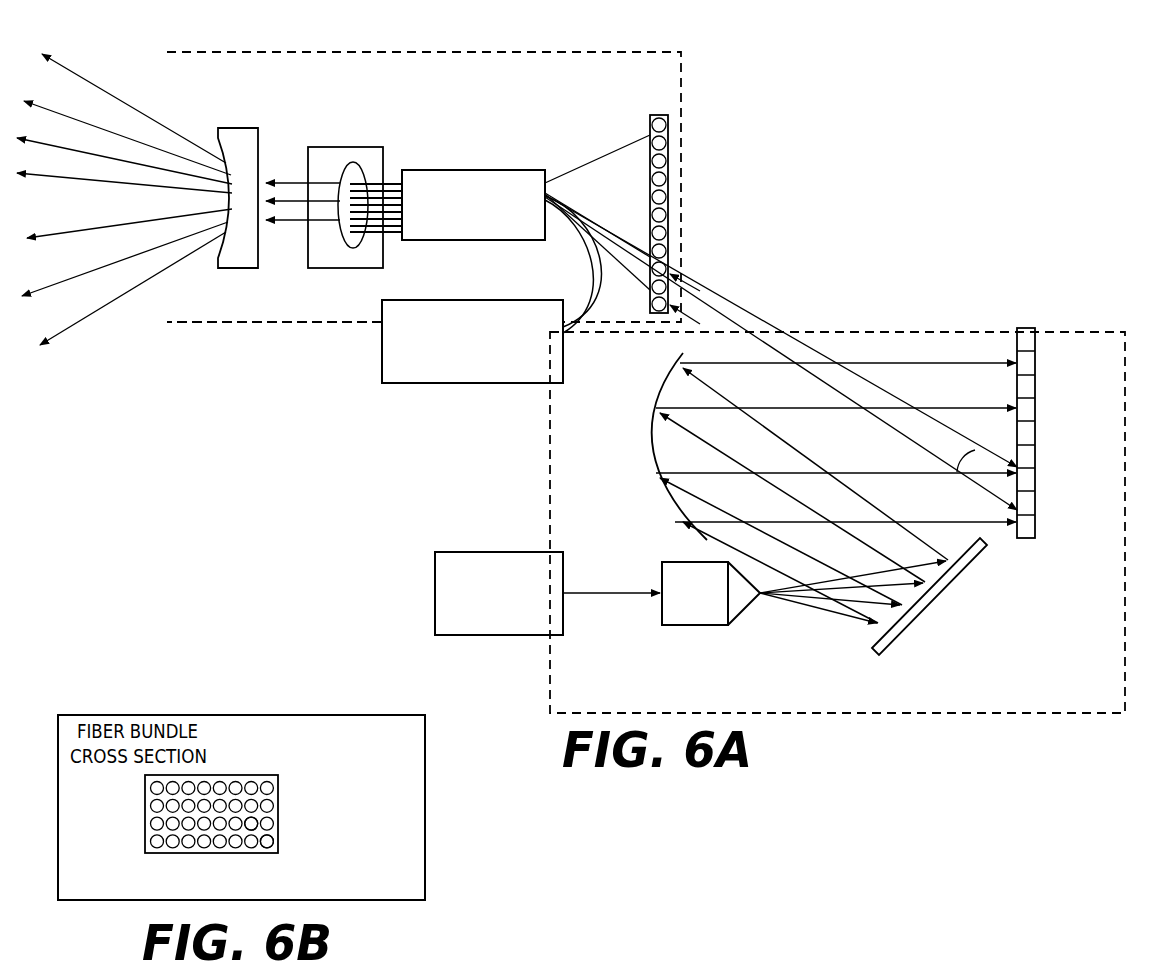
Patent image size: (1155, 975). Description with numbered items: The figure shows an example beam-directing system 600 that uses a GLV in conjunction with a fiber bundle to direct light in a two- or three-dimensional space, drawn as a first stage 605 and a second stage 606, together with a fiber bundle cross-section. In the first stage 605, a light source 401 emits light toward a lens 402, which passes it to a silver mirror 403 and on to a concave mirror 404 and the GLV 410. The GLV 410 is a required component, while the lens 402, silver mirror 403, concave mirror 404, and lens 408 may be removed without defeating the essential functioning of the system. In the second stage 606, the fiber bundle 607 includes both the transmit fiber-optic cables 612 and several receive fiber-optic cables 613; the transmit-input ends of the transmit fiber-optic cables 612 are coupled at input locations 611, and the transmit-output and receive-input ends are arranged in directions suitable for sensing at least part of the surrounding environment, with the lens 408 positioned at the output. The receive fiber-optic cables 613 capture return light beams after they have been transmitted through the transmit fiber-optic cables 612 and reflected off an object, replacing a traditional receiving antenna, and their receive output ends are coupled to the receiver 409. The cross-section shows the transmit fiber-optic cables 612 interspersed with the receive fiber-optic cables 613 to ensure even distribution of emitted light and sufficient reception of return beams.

In FIG. 6A, the beam-directing system 600 is at (893, 62).
In FIG. 6A, the second stage 606 is at (578, 118).
In FIG. 6A, the first stage 605 is at (622, 698).
In FIG. 6A, the lens 408 is at (137, 199).
In FIG. 6A, the fiber bundle 607 is at (475, 226).
In FIG. 6A, the transmit fiber-optic cables 612 is at (781, 322).
In FIG. 6B, the transmit fiber-optic cables 612 is at (282, 836).
In FIG. 6A, the receive fiber-optic cables 613 is at (573, 264).
In FIG. 6B, the receive fiber-optic cables 613 is at (258, 822).
In FIG. 6A, the input locations 611 is at (686, 214).
In FIG. 6A, the receiver 409 is at (487, 365).
In FIG. 6A, the GLV 410 is at (1030, 433).
In FIG. 6A, the concave mirror 404 is at (790, 488).
In FIG. 6A, the light source 401 is at (513, 628).
In FIG. 6A, the lens 402 is at (710, 615).
In FIG. 6A, the silver mirror 403 is at (947, 597).